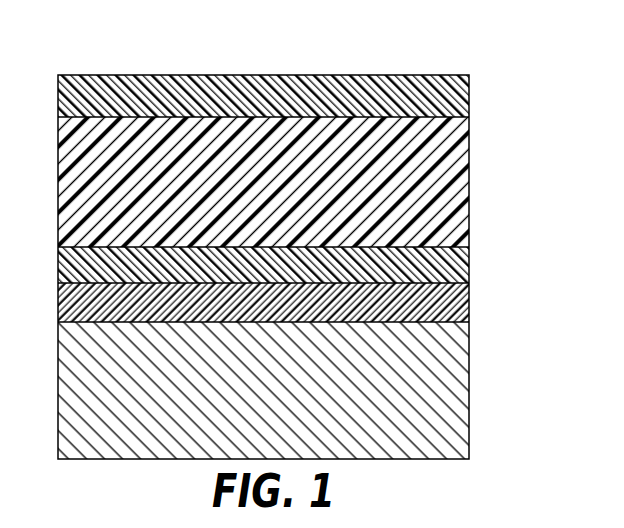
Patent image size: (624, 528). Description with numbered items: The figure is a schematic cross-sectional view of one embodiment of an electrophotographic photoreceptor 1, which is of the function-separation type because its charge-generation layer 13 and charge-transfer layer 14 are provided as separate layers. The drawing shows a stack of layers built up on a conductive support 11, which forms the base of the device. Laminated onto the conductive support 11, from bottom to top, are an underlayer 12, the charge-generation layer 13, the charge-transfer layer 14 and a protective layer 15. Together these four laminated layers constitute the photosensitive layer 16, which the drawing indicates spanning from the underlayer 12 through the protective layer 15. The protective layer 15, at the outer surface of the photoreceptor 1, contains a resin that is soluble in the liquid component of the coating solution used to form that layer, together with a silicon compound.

The photoreceptor 1 is at (430, 51).
The conductive support 11 is at (469, 368).
The underlayer 12 is at (469, 302).
The charge-generation layer 13 is at (285, 265).
The charge-transfer layer 14 is at (469, 168).
The protective layer 15 is at (469, 98).
The photosensitive layer 16 is at (309, 179).